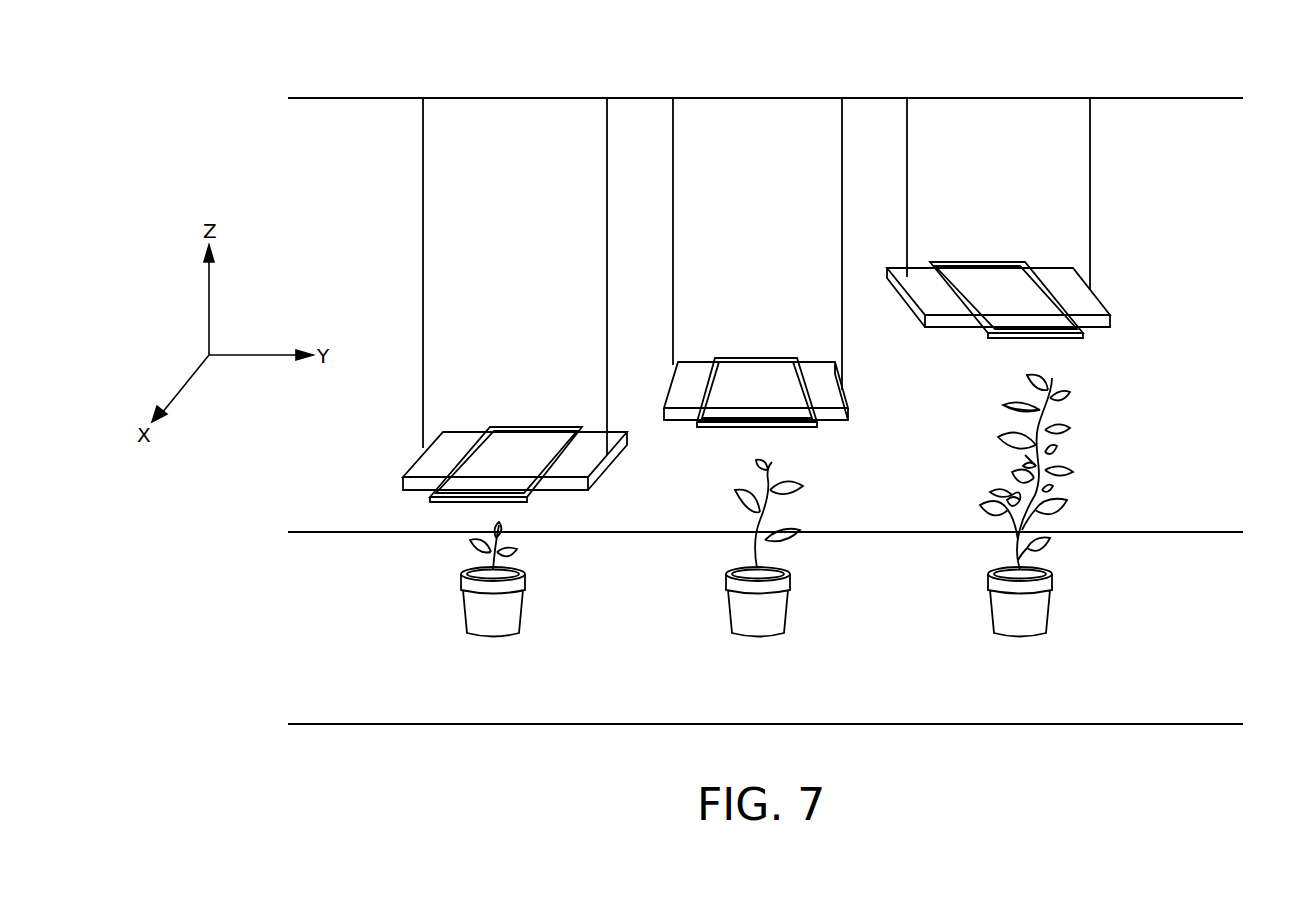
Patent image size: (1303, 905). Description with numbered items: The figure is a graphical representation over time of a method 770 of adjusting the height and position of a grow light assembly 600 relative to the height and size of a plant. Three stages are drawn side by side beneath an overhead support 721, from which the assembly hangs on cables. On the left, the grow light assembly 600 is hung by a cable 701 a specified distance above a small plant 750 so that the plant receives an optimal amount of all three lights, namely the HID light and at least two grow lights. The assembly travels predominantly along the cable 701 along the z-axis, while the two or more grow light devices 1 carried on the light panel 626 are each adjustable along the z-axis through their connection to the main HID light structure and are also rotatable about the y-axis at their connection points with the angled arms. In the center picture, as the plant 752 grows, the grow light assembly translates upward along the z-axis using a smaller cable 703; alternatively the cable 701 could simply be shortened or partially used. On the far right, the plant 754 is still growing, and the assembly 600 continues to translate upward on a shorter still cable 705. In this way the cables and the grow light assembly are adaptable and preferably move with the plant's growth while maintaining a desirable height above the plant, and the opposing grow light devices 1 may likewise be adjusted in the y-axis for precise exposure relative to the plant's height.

The method 770 is at (226, 58).
The overhead support rail 721 is at (1198, 97).
The cable 701 is at (423, 207).
The smaller cable 703 is at (673, 207).
The shorter still cable 705 is at (907, 207).
The light panel 626 is at (607, 463).
The grow light assembly 600 is at (761, 357).
The grow light device 1 is at (570, 428).
The plant 750 is at (462, 605).
The plant 752 is at (725, 605).
The plant 754 is at (988, 605).